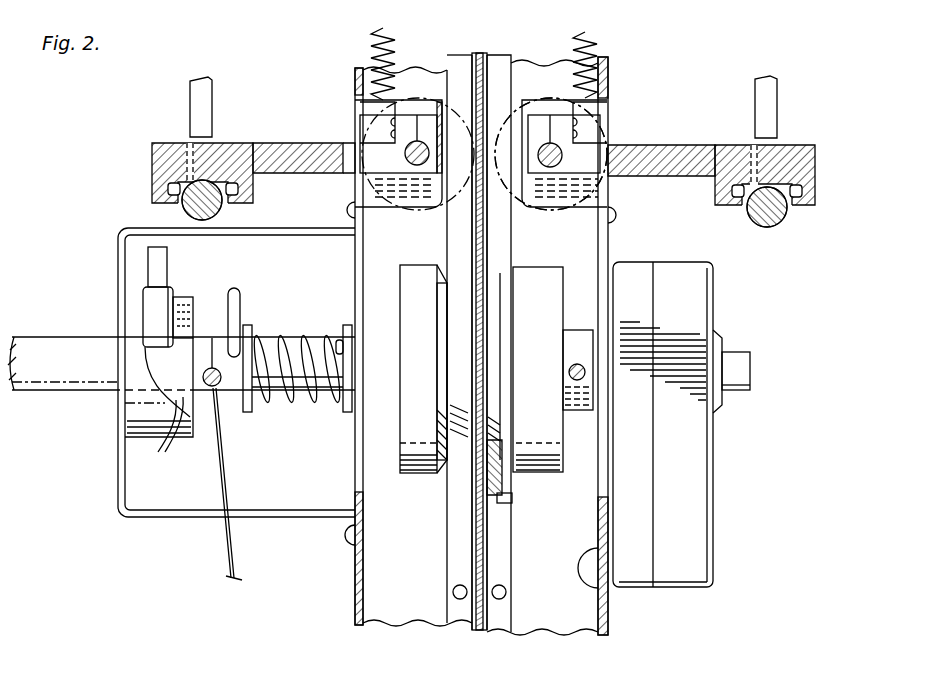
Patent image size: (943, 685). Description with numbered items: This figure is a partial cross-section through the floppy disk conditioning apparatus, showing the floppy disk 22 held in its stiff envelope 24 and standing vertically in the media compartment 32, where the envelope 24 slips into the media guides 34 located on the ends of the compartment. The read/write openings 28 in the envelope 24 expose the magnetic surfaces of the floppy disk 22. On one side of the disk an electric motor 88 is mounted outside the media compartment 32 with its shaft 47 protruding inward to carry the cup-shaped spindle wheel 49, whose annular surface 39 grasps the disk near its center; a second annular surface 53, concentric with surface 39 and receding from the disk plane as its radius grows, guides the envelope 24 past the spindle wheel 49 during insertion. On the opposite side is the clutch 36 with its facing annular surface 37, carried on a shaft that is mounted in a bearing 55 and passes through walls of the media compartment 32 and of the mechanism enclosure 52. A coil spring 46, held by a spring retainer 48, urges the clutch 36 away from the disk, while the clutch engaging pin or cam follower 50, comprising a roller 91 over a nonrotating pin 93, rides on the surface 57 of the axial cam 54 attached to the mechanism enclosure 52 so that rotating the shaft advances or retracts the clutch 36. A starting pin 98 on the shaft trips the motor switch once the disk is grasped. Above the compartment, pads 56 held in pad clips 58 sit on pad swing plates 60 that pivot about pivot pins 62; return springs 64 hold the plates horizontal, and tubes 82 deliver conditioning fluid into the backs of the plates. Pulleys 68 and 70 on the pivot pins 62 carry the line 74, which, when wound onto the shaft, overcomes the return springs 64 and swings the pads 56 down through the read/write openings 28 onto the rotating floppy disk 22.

The floppy disk 22 is at (478, 53).
The envelope 24 is at (497, 55).
The read/write openings 28 is at (473, 327).
The media compartment 32 is at (608, 620).
The media guides 34 is at (457, 608).
The clutch 36 is at (418, 440).
The annular surface 37 is at (445, 285).
The annular surface 39 is at (498, 275).
The coil spring 46 is at (285, 337).
The shaft 47 is at (740, 372).
The spring retainer 48 is at (250, 412).
The spindle wheel 49 is at (550, 280).
The clutch engaging pin or cam follower 50 is at (143, 287).
The mechanism enclosure 52 is at (160, 517).
The second annular surface 53 is at (497, 503).
The axial cam 54 is at (143, 417).
The bearing 55 is at (352, 405).
The pads 56 is at (182, 212).
The surface 57 is at (168, 440).
The pad clip 58 is at (167, 173).
The pad swing plate 60 is at (293, 150).
The pivot pin 62 is at (407, 150).
The return springs 64 is at (372, 38).
The pulley 68 is at (355, 183).
The pulley 70 is at (610, 197).
The line 74 is at (234, 548).
The tubes 82 is at (195, 106).
The electric motor 88 is at (690, 302).
The roller 91 is at (150, 320).
The nonrotating pin 93 is at (153, 257).
The starting pin 98 is at (236, 292).